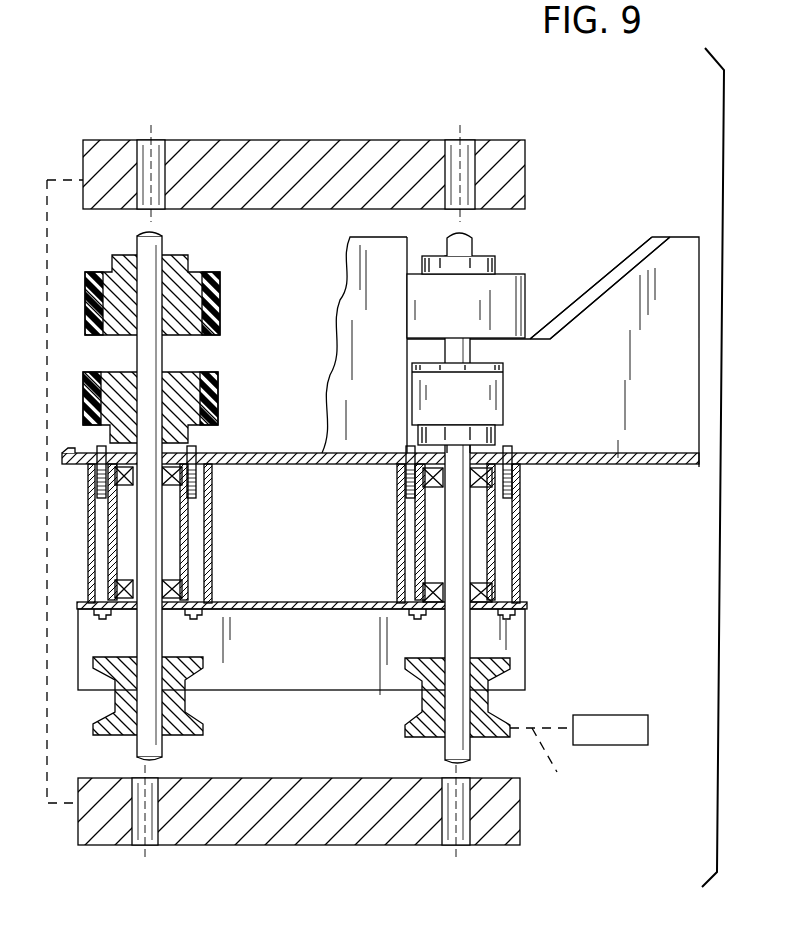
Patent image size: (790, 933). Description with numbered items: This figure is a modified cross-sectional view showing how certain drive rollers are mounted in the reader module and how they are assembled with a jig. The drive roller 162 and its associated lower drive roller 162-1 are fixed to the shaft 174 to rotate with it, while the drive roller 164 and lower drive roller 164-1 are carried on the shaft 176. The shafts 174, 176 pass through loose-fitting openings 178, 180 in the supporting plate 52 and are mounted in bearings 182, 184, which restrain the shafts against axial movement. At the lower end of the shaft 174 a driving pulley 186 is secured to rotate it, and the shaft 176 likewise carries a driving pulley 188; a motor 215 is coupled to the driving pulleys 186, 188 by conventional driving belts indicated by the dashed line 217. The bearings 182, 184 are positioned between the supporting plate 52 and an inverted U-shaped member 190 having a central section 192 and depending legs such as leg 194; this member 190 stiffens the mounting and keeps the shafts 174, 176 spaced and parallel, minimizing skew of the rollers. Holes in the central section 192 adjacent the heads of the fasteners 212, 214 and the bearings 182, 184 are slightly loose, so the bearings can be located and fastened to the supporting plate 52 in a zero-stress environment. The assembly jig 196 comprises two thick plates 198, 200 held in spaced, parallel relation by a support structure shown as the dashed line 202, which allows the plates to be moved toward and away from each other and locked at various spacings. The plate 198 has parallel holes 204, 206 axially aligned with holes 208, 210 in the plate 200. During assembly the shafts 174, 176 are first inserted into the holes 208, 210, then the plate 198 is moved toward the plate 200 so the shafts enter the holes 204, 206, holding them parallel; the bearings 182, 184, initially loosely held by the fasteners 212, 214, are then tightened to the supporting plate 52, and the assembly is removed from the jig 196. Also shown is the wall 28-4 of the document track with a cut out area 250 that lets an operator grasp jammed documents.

The wall 28-4 is at (680, 236).
The supporting plate 52 is at (586, 477).
The drive roller 162 is at (216, 288).
The lower drive roller 162-1 is at (213, 386).
The drive roller 164 is at (518, 290).
The lower drive roller 164-1 is at (493, 398).
The shaft 174 is at (162, 246).
The shaft 176 is at (470, 244).
The loose-fitting opening 178 is at (178, 459).
The loose-fitting opening 180 is at (480, 459).
The bearing 182 is at (213, 523).
The bearing 184 is at (398, 522).
The driving pulley 186 is at (192, 732).
The driving pulley 188 is at (405, 730).
The inverted U-shaped member 190 is at (325, 628).
The central section 192 is at (289, 610).
The depending leg 194 is at (317, 690).
The assembly jig 196 is at (302, 137).
The thick plate 198 is at (365, 140).
The thick plate 200 is at (333, 848).
The support structure 202 is at (57, 114).
The hole 204 is at (160, 152).
The hole 206 is at (470, 152).
The hole 208 is at (140, 832).
The hole 210 is at (470, 838).
The fastener 212 is at (205, 648).
The fastener 214 is at (515, 616).
The motor 215 is at (608, 714).
The driving belt 217 is at (555, 756).
The cut out area 250 is at (632, 257).